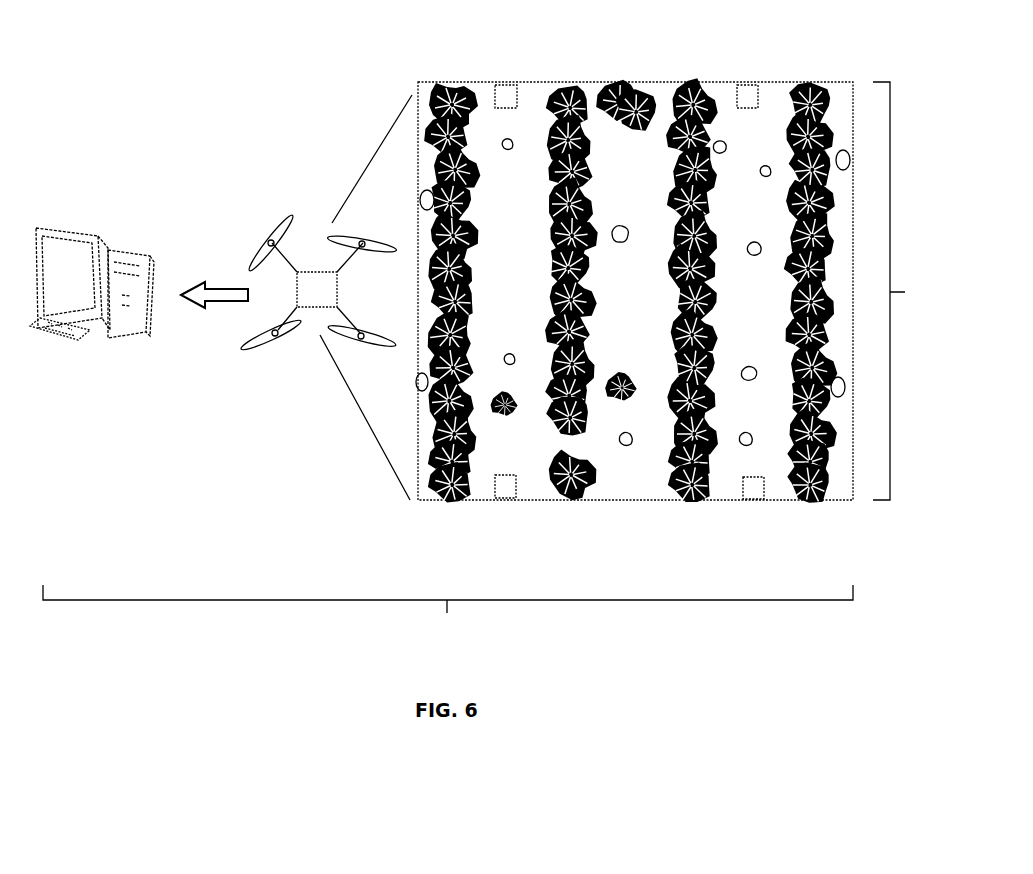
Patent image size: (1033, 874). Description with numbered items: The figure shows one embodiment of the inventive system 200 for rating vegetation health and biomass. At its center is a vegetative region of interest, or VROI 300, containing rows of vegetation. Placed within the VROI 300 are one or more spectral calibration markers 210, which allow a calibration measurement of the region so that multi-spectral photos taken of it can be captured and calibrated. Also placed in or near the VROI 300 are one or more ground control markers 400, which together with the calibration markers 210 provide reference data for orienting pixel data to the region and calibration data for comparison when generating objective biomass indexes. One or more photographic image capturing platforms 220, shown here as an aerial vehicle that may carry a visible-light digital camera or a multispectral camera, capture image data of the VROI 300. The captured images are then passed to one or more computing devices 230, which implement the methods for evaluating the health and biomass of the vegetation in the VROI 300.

The inventive system 200 is at (490, 335).
The spectral calibration markers 210 is at (503, 91).
The photographic image capturing platforms 220 is at (313, 318).
The computing devices 230 is at (75, 348).
The VROI 300 is at (683, 293).
The ground control markers 400 is at (425, 196).